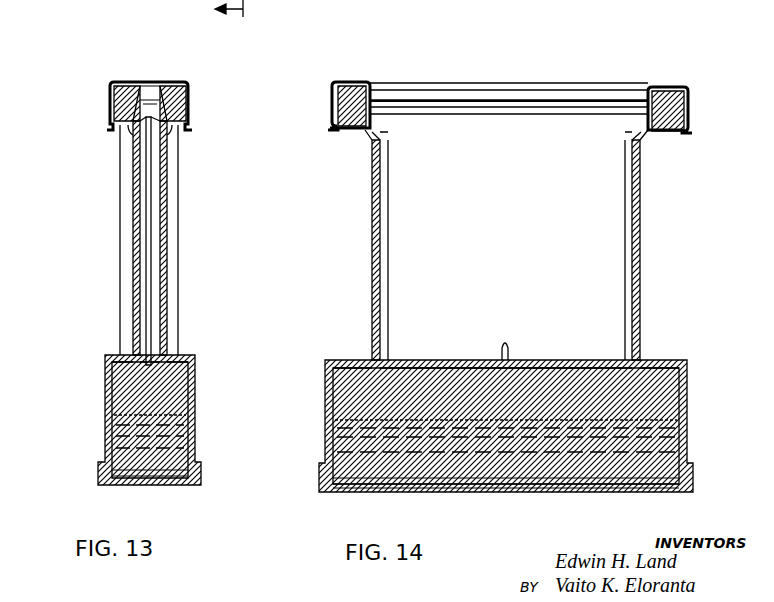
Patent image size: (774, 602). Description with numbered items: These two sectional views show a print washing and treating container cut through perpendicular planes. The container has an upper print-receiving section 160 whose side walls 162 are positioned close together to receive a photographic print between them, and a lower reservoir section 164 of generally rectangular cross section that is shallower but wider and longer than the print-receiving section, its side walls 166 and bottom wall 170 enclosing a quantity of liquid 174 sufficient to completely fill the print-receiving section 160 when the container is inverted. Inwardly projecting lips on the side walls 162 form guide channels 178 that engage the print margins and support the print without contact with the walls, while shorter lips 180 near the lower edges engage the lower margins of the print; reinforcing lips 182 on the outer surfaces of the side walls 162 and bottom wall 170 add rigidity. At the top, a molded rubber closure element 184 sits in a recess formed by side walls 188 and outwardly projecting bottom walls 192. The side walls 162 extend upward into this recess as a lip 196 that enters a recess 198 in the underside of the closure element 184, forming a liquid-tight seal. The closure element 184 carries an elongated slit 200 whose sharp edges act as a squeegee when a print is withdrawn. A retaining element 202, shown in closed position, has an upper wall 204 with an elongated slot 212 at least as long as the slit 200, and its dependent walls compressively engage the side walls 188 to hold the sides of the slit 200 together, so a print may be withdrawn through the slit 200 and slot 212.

In FIG. 13, the upper print-receiving section 160 is at (180, 200).
In FIG. 14, the upper print-receiving section 160 is at (372, 185).
In FIG. 14, the side walls 162 is at (524, 227).
In FIG. 13, the lower reservoir section 164 is at (195, 408).
In FIG. 14, the side walls 166 is at (490, 398).
In FIG. 13, the bottom wall 170 is at (165, 476).
In FIG. 14, the bottom wall 170 is at (530, 483).
In FIG. 13, the liquid 174 is at (165, 405).
In FIG. 14, the liquid 174 is at (545, 425).
In FIG. 13, the guide channels 178 is at (148, 200).
In FIG. 14, the projecting members or lips 180 is at (508, 350).
In FIG. 14, the reinforcing lips 182 is at (492, 483).
In FIG. 13, the closure element 184 is at (162, 82).
In FIG. 13, the side walls 188 is at (188, 112).
In FIG. 13, the bottom walls 192 is at (180, 128).
In FIG. 13, the lip 196 is at (128, 135).
In FIG. 13, the recess 198 is at (138, 82).
In FIG. 14, the recess 198 is at (505, 84).
In FIG. 13, the elongated slit 200 is at (150, 82).
In FIG. 14, the elongated slit 200 is at (565, 98).
In FIG. 13, the retaining element 202 is at (108, 78).
In FIG. 13, the upper wall 204 is at (178, 82).
In FIG. 13, the elongated slot 212 is at (108, 80).
In FIG. 14, the elongated slot 212 is at (415, 84).